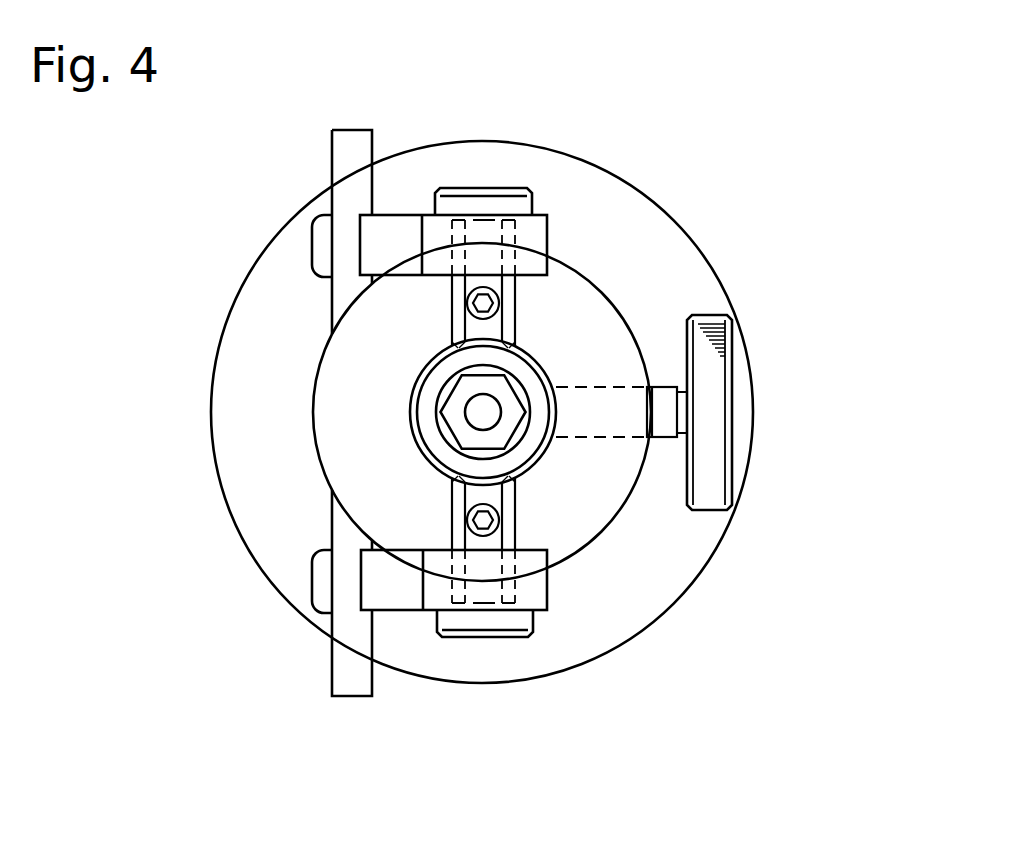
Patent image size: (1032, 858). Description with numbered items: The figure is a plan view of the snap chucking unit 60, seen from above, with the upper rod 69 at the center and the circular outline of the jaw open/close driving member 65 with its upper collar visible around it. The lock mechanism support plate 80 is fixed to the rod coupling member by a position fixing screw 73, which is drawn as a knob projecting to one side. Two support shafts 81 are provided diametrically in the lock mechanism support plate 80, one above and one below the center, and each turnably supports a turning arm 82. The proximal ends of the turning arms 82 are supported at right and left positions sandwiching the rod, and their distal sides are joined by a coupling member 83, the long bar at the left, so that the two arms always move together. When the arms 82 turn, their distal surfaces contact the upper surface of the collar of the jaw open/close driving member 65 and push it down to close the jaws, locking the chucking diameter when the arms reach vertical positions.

The snap chucking unit 60 is at (794, 238).
The jaw open/close driving member 65 is at (637, 637).
The upper rod 69 is at (417, 380).
The position fixing screw 73 is at (732, 360).
The lock mechanism support plate 80 is at (600, 291).
The support shaft 81 is at (498, 188).
The turning arm 82 is at (393, 215).
The coupling member 83 is at (332, 162).